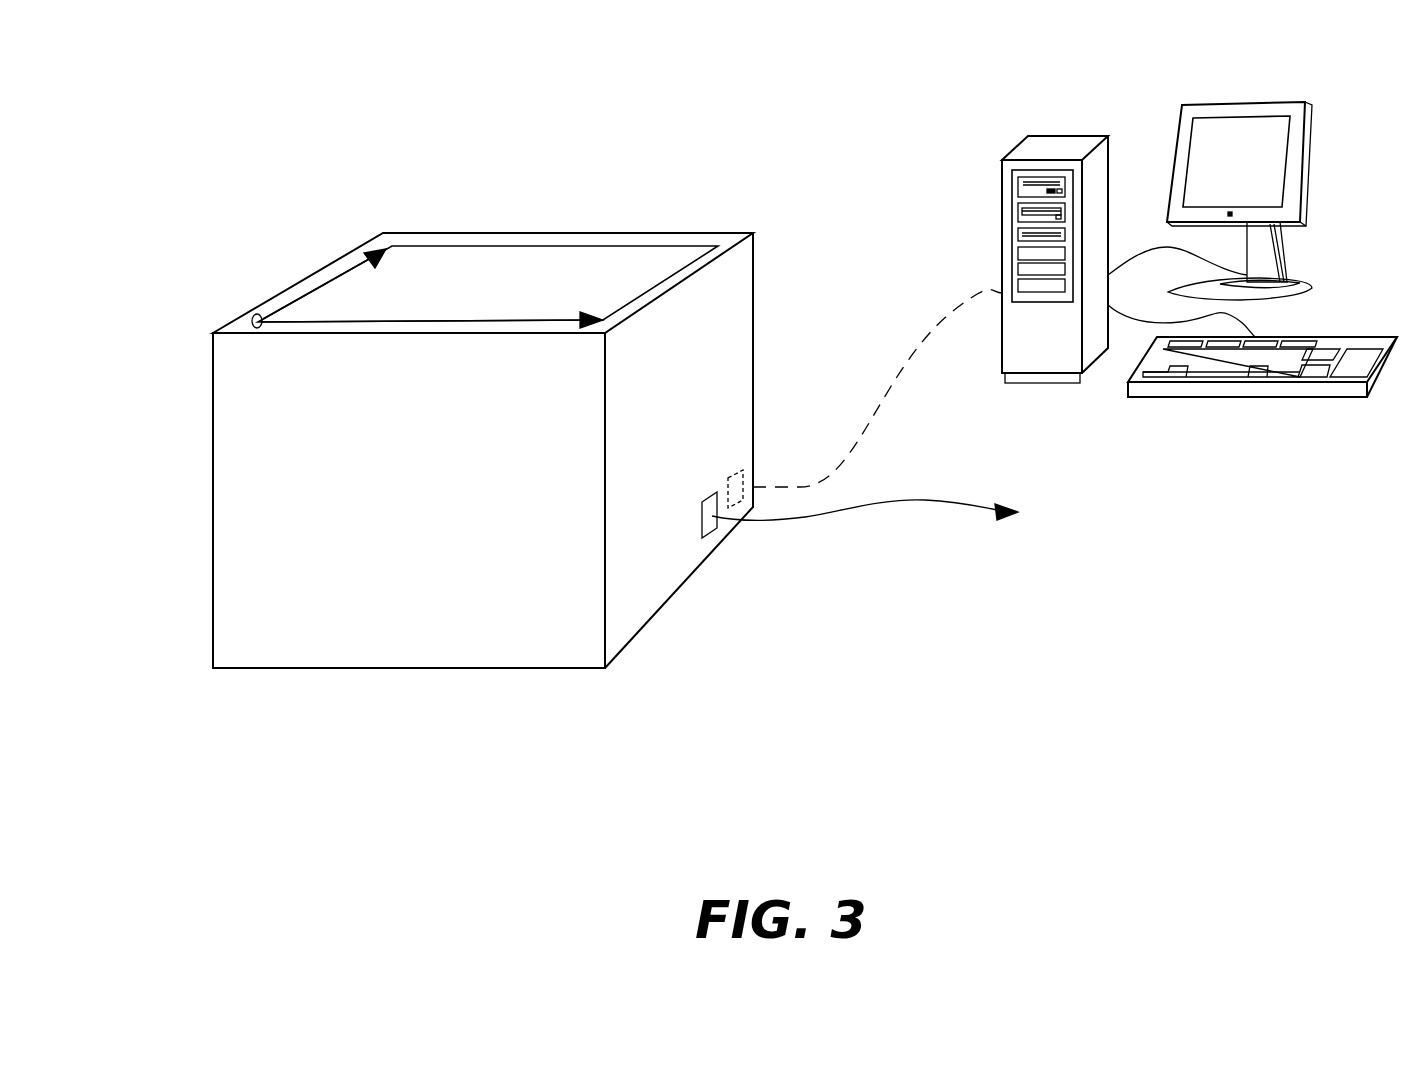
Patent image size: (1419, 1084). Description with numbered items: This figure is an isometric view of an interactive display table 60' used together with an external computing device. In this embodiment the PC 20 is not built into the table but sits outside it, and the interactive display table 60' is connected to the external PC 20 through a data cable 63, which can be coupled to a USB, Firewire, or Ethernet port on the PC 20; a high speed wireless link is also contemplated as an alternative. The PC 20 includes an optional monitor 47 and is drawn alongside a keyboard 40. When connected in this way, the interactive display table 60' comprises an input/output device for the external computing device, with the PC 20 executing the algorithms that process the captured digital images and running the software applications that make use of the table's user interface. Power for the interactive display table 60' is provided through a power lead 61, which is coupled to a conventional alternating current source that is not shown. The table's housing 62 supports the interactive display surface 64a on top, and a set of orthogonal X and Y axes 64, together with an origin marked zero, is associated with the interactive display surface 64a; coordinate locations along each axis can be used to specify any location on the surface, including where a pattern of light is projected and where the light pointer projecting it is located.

The PC 20 is at (1063, 135).
The keyboard 40 is at (1345, 337).
The monitor 47 is at (1306, 160).
The interactive display table 60' is at (483, 388).
The power lead 61 is at (868, 505).
The housing 62 is at (212, 452).
The data cable 63 is at (888, 380).
The coordinate axes of sensing surface 64 is at (378, 252).
The interactive display surface 64a is at (514, 301).